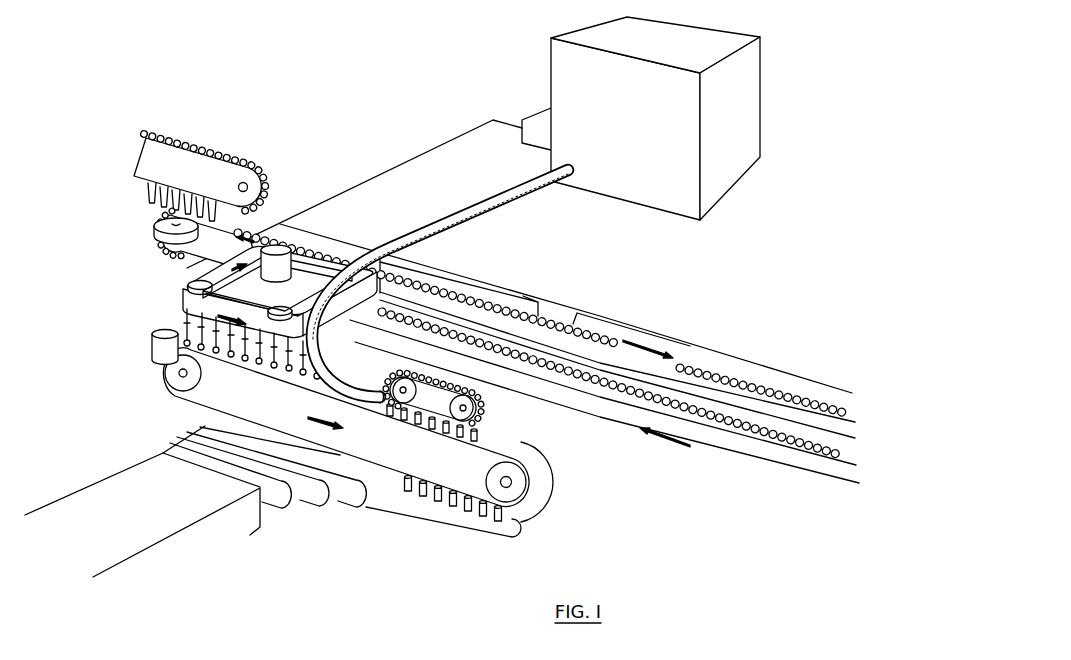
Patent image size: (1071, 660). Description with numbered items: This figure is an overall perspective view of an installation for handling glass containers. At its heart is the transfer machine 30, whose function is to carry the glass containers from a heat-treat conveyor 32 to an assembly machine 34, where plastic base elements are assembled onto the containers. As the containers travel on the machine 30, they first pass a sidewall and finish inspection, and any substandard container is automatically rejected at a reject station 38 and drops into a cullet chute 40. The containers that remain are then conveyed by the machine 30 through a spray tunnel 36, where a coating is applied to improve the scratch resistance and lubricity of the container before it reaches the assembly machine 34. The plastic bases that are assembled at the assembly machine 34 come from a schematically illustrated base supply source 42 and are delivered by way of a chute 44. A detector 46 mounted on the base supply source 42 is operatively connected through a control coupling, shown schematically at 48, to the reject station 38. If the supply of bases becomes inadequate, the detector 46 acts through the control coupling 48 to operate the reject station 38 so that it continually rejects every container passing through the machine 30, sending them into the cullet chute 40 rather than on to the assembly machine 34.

The machine 30 is at (317, 267).
The heat-treat conveyor 32 is at (550, 312).
The assembly machine 34 is at (197, 413).
The spray tunnel 36 is at (184, 276).
The reject station 38 is at (265, 242).
The cullet chute 40 is at (152, 349).
The base supply source 42 is at (750, 143).
The chute 44 is at (497, 207).
The detector 46 is at (537, 112).
The control coupling 48 is at (413, 158).